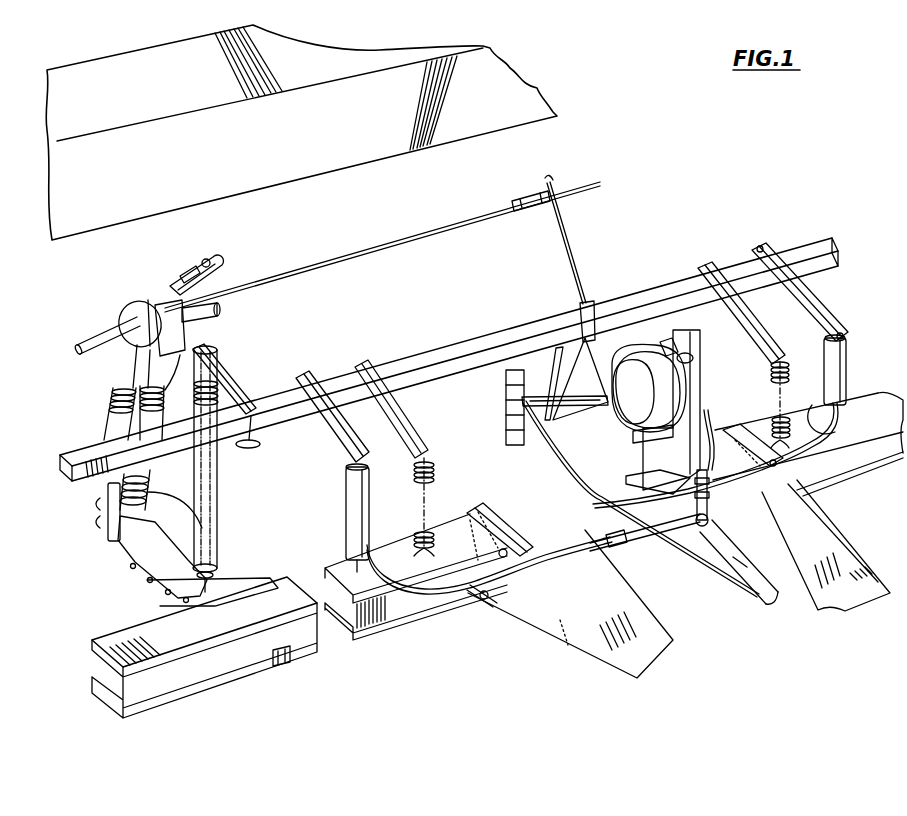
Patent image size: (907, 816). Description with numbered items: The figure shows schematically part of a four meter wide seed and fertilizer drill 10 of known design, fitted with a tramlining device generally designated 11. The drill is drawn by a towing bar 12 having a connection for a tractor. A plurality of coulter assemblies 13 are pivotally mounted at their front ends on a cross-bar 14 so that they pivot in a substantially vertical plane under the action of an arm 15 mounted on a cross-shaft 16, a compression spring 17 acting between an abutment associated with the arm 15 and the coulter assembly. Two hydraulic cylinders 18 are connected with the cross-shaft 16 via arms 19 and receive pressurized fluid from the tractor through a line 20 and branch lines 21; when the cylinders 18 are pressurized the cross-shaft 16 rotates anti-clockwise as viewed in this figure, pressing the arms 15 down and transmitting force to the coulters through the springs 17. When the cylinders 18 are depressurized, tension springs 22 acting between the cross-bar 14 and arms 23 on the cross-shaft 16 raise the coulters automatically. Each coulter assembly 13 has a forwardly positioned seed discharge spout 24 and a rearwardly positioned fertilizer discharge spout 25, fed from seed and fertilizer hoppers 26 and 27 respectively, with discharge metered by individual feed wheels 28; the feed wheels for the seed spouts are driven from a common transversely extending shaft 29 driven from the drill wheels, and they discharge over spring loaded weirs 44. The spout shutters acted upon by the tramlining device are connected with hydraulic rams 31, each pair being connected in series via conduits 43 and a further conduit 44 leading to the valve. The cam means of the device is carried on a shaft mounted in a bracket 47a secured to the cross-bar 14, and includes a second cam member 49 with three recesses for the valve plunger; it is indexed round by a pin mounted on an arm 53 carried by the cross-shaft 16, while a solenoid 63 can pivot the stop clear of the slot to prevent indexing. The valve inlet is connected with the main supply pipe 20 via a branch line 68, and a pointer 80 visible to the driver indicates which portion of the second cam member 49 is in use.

The seed and fertilizer drill 10 is at (221, 213).
The tramlining device 11 is at (571, 408).
The towing bar 12 is at (822, 537).
The coulter assemblies 13 is at (125, 578).
The cross-bar 14 is at (403, 603).
The arm 15 is at (233, 383).
The cross-shaft 16 is at (273, 423).
The compression spring 17 is at (224, 507).
The hydraulic cylinders 18 is at (346, 510).
The arms 19 is at (333, 395).
The line 20 is at (770, 597).
The branch lines 21 is at (803, 412).
The tension springs 22 is at (435, 485).
The arms 23 is at (405, 395).
The seed discharge spout 24 is at (132, 424).
The fertilizer discharge spout 25 is at (110, 412).
The seed hopper 26 is at (115, 207).
The fertilizer hopper 27 is at (92, 70).
The feed wheels 28 is at (142, 310).
The shaft 29 is at (217, 315).
The hydraulic rams 31 is at (228, 277).
The conduits 43 is at (482, 208).
The conduit 44 is at (143, 348).
The bracket 47a is at (685, 333).
The second cam member 49 is at (643, 452).
The arm 53 is at (558, 352).
The solenoid 63 is at (506, 394).
The branch line 68 is at (712, 417).
The pointer 80 is at (683, 357).